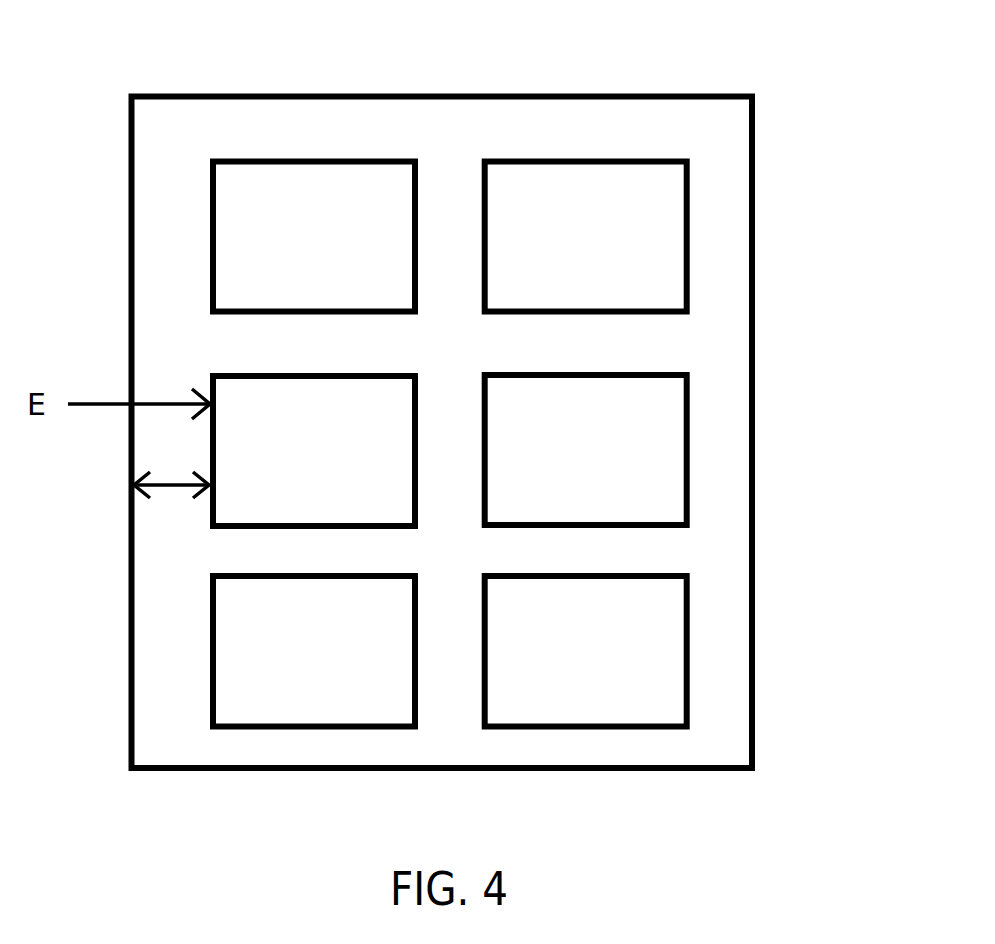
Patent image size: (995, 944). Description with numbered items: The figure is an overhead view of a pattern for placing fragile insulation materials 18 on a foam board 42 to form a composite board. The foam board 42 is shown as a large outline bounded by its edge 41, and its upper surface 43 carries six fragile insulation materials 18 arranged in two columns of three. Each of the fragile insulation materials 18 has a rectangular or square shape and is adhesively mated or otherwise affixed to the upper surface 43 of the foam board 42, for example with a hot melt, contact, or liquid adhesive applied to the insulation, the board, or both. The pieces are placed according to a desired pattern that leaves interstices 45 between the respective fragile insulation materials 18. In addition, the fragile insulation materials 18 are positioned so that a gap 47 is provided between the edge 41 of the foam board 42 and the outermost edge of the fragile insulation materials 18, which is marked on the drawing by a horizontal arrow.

The fragile insulation materials 18 is at (627, 463).
The edge 41 is at (754, 255).
The foam board 42 is at (130, 703).
The upper surface 43 is at (163, 143).
The interstices 45 is at (447, 173).
The gap 47 is at (175, 493).